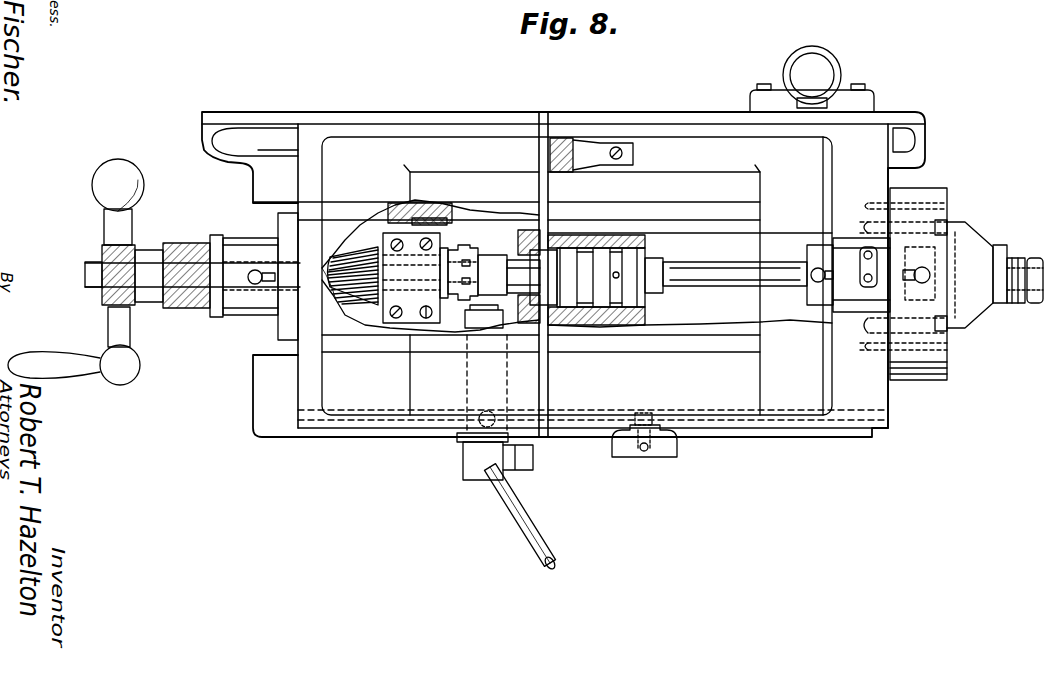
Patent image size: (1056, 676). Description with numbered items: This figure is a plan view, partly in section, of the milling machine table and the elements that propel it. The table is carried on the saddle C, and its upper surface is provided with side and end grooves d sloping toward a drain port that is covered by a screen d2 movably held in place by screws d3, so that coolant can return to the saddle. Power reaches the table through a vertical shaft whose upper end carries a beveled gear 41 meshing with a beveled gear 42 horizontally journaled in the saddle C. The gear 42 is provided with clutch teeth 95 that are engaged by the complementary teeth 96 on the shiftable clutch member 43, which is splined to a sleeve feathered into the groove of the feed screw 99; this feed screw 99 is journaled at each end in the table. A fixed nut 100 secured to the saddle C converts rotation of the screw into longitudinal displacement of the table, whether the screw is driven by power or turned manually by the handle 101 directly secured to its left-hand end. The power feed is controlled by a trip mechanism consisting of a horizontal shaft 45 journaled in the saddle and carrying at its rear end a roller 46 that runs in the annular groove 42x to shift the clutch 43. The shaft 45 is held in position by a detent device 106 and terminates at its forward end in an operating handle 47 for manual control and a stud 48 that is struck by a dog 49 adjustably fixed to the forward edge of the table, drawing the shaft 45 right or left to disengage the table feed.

The handle 101 is at (133, 220).
The beveled gear 41 is at (350, 248).
The beveled gear 42 is at (382, 255).
The annular groove 42x is at (490, 254).
The shiftable clutch member 43 is at (468, 244).
The clutch teeth 95 is at (470, 264).
The complementary teeth 96 is at (470, 282).
The feed screw 99 is at (333, 305).
The fixed nut 100 is at (600, 325).
The saddle C is at (645, 312).
The horizontal shaft 45 is at (463, 386).
The roller 46 is at (503, 330).
The operating handle 47 is at (562, 512).
The stud 48 is at (533, 457).
The dog 49 is at (616, 457).
The detent device 106 is at (487, 411).
The grooves d is at (542, 276).
The screen d2 is at (561, 172).
The screws d3 is at (633, 153).